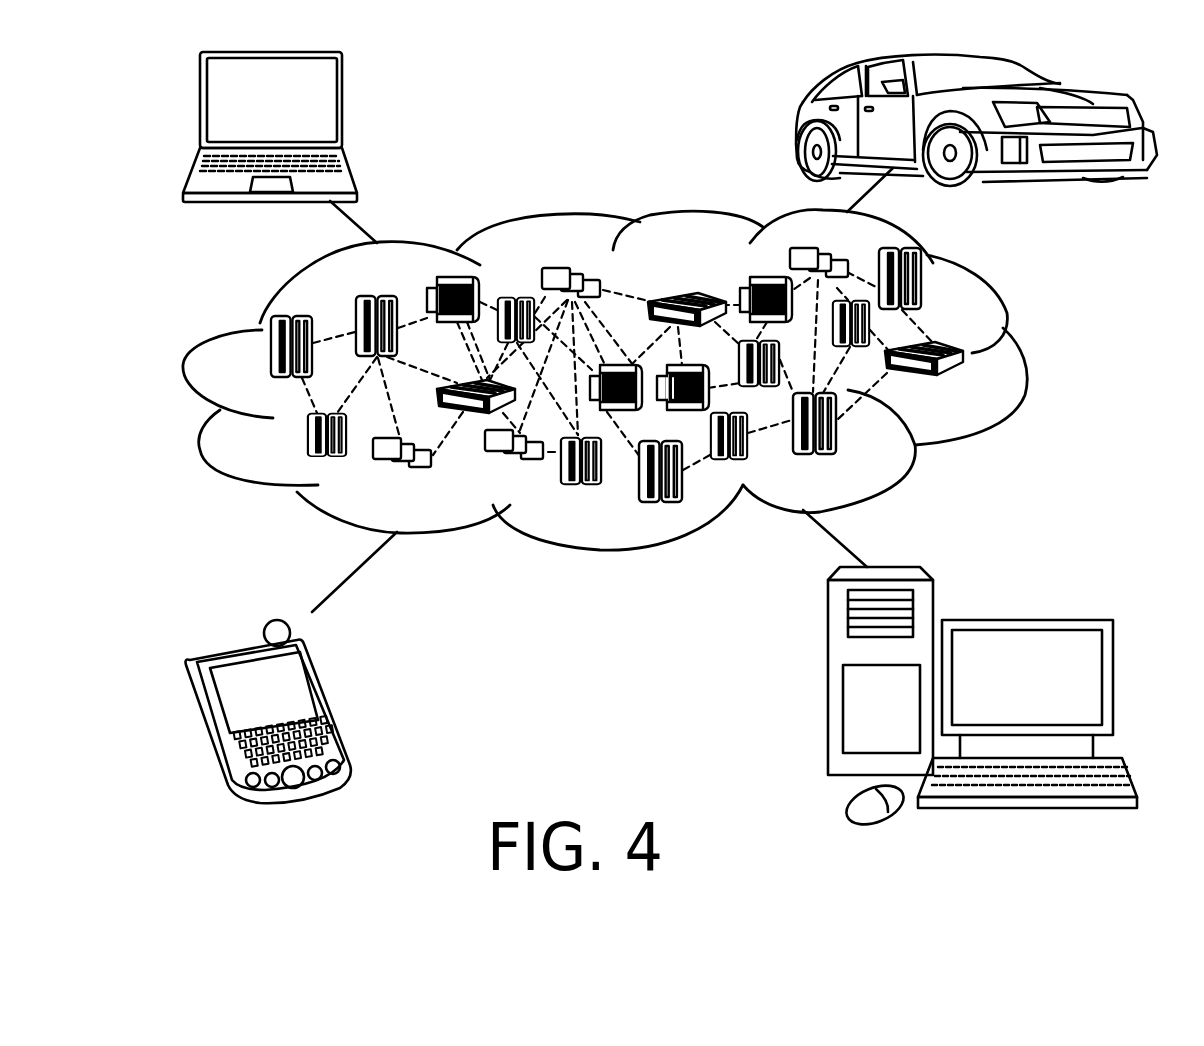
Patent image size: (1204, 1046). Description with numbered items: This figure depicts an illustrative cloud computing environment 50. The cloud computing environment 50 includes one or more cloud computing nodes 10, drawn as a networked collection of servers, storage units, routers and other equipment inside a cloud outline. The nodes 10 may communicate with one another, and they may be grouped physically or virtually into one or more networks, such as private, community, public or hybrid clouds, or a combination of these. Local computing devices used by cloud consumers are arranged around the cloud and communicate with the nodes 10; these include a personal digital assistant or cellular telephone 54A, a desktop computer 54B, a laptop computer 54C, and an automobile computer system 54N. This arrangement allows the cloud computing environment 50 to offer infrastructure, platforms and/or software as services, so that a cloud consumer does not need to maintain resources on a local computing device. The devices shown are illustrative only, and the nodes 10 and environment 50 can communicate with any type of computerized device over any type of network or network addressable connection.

The cloud computing node 10 is at (966, 385).
The cloud computing environment 50 is at (1027, 358).
The personal digital assistant or cellular telephone 54A is at (332, 705).
The desktop computer 54B is at (1022, 620).
The laptop computer 54C is at (343, 108).
The automobile computer system 54N is at (798, 118).